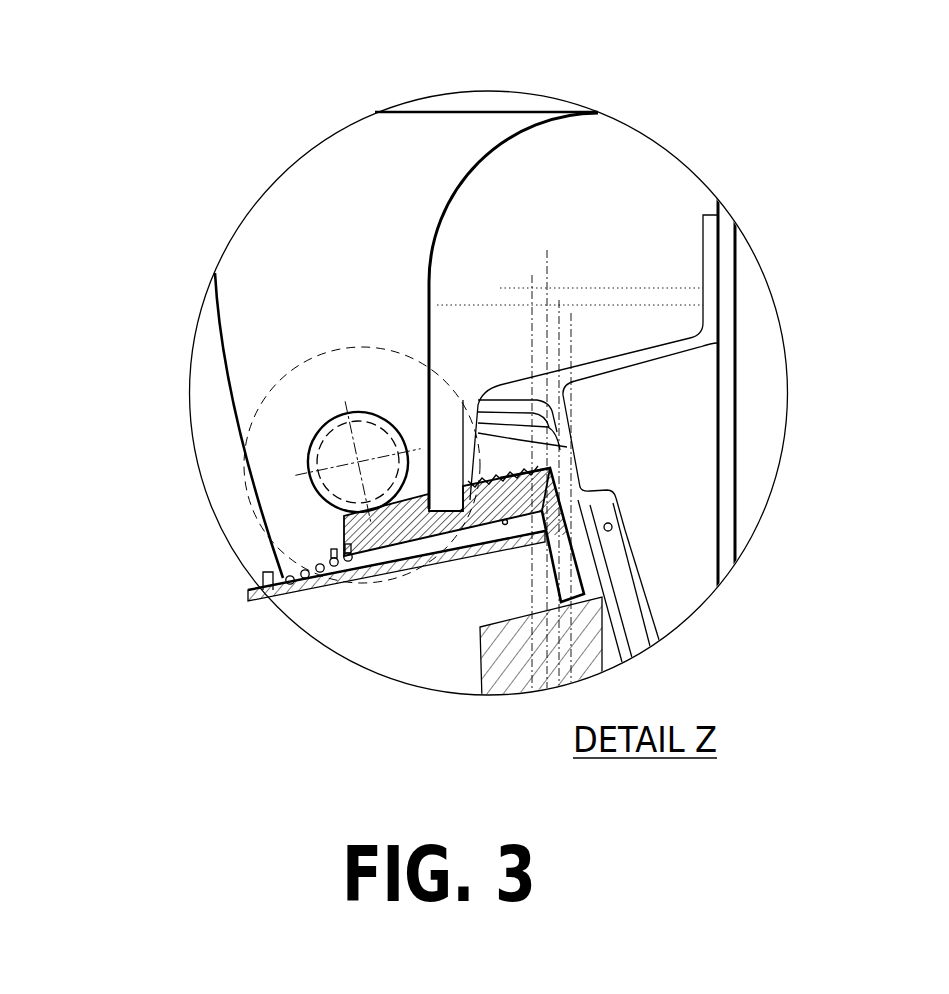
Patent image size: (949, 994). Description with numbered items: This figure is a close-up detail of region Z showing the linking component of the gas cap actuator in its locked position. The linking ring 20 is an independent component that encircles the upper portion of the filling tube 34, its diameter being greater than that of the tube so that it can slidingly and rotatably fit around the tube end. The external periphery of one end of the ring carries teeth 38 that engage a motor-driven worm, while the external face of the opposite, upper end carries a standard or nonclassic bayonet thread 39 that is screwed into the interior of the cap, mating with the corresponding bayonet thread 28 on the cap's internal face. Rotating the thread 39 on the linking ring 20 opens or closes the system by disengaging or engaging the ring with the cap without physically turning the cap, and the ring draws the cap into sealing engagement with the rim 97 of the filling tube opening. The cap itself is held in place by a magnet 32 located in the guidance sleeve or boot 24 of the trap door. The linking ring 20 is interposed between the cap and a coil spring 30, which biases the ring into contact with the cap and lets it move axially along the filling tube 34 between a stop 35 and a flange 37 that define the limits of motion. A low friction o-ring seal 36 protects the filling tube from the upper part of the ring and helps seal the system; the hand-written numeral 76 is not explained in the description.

The linking ring 20 is at (372, 570).
The guidance sleeve or boot 24 is at (650, 598).
The bayonet thread 28 is at (573, 603).
The coil spring 30 is at (335, 553).
The magnet 32 is at (633, 495).
The filling tube 34 is at (258, 584).
The stop 35 is at (268, 588).
The o-ring seal 36 is at (545, 466).
The flange 37 is at (468, 540).
The teeth 38 is at (415, 425).
The bayonet thread 39 is at (490, 400).
The toothed engagement portion 76 is at (497, 507).
The rim 97 is at (493, 522).